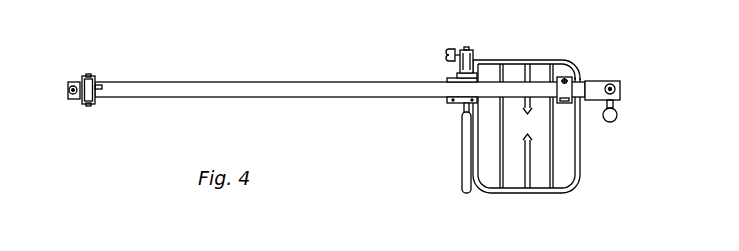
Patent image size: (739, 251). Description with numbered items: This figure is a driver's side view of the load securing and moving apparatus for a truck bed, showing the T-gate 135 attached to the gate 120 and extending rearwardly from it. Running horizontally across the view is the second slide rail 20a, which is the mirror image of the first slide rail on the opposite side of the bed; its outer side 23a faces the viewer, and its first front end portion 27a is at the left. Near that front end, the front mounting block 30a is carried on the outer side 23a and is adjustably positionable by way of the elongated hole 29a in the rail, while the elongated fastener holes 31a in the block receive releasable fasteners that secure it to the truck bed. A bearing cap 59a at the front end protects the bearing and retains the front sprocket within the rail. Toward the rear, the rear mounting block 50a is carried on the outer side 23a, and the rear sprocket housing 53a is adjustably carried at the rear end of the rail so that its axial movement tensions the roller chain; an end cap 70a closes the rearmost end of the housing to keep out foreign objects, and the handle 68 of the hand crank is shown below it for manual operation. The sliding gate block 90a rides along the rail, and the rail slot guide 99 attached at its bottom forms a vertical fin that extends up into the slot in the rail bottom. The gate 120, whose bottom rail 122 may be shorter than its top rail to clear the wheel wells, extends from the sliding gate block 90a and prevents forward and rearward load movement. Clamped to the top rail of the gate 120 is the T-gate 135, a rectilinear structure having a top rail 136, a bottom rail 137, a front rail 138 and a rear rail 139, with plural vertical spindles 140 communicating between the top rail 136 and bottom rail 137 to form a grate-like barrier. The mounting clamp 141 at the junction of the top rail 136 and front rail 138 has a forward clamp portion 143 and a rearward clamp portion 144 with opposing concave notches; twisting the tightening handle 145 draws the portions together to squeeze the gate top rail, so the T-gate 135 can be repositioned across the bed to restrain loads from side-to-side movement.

The second slide rail 20a is at (340, 79).
The outer side 23a is at (188, 96).
The first front end portion 27a is at (65, 91).
The elongated hole 29a is at (100, 85).
The front mounting block 30a is at (118, 89).
The elongated fastener holes 31a is at (94, 104).
The bearing caps 59a is at (72, 99).
The rear mounting block 50a is at (562, 77).
The rear sprocket housing 53a is at (623, 98).
The handle 68 is at (608, 119).
The end cap 70a is at (622, 97).
The sliding gate block 90a is at (449, 78).
The rail slot guide 99 is at (458, 104).
The gate 120 is at (429, 145).
The bottom rail 122 is at (203, 2).
The T-gate 135 is at (482, 108).
The top rail 136 is at (512, 62).
The bottom rail 137 is at (502, 194).
The front rail 138 is at (463, 141).
The rear rail 139 is at (582, 158).
The vertical spindles 140 is at (552, 142).
The mounting clamp 141 is at (453, 41).
The forward clamp portion 143 is at (464, 52).
The rearward clamp portion 144 is at (473, 62).
The tightening handle 145 is at (446, 56).